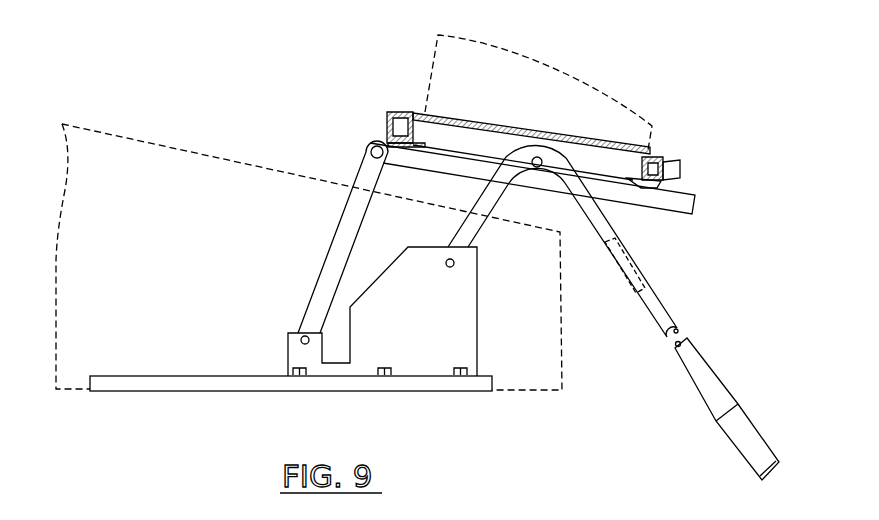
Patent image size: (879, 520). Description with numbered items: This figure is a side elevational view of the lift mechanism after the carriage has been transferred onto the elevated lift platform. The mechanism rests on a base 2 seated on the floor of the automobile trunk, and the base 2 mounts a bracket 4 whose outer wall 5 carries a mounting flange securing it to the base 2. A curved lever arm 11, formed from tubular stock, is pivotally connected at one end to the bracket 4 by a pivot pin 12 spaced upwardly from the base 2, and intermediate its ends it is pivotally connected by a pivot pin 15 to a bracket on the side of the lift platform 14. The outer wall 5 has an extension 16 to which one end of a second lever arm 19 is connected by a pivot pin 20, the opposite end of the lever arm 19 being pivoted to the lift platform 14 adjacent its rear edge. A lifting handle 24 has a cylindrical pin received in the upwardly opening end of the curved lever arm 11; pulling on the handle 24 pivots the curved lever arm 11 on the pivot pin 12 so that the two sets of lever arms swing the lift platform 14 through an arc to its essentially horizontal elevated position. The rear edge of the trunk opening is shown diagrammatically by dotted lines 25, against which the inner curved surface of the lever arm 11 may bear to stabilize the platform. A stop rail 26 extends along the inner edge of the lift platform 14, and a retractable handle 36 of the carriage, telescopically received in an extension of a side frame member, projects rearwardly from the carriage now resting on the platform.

The base 2 is at (130, 376).
The bracket 4 is at (388, 306).
The outer wall 5 is at (428, 320).
The curved lever arm 11 is at (598, 219).
The pivot pin 12 is at (454, 266).
The lift platform 14 is at (665, 208).
The pivot pin 15 is at (536, 168).
The extension 16 is at (288, 353).
The lever arm 19 is at (338, 225).
The pivot pin 20 is at (301, 339).
The lifting handle 24 is at (652, 144).
The dotted lines (trunk opening) 25 is at (123, 136).
The stop rail 26 is at (386, 118).
The retractable handle 36 is at (680, 170).